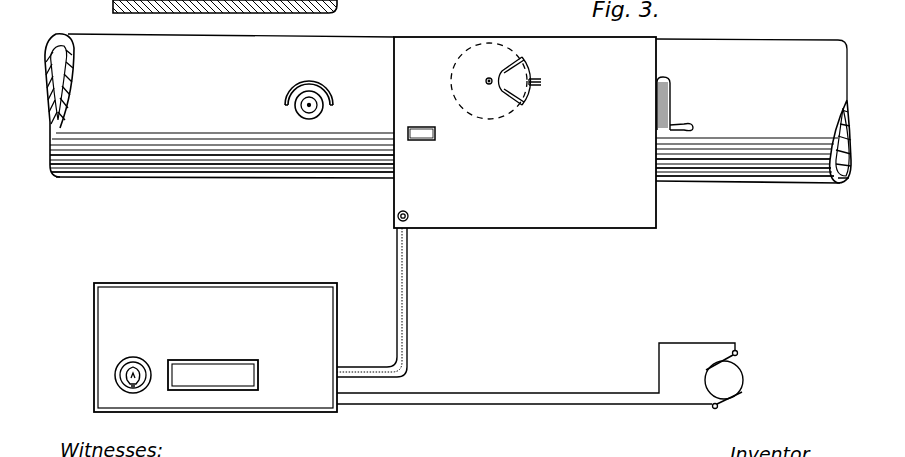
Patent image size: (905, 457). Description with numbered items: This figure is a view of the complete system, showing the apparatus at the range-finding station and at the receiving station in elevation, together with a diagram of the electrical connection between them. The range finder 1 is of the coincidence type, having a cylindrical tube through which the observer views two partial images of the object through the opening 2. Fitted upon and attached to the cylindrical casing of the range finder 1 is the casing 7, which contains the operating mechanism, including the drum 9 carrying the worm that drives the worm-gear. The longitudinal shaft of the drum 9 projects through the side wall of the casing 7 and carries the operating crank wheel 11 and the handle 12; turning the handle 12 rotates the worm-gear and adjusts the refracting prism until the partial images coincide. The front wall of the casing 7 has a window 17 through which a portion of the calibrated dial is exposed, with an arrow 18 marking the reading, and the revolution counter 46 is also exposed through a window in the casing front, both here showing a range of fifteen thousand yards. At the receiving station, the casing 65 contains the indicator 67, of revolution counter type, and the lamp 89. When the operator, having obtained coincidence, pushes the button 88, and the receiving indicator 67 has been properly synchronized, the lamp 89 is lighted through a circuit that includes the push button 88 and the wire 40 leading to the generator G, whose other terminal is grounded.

The range finder 1 is at (772, 68).
The opening 2 is at (295, 111).
The casing 7 is at (612, 160).
The drum 9 is at (463, 412).
The operating crank wheel 11 is at (669, 93).
The handle 12 is at (689, 124).
The window 17 is at (516, 100).
The arrow 18 is at (543, 81).
The wire 40 is at (480, 392).
The revolution counter 46 is at (430, 121).
The casing 65 is at (227, 300).
The indicator 67 is at (247, 362).
The push button 88 is at (409, 214).
The lamp 89 is at (141, 362).
The generator G is at (744, 379).